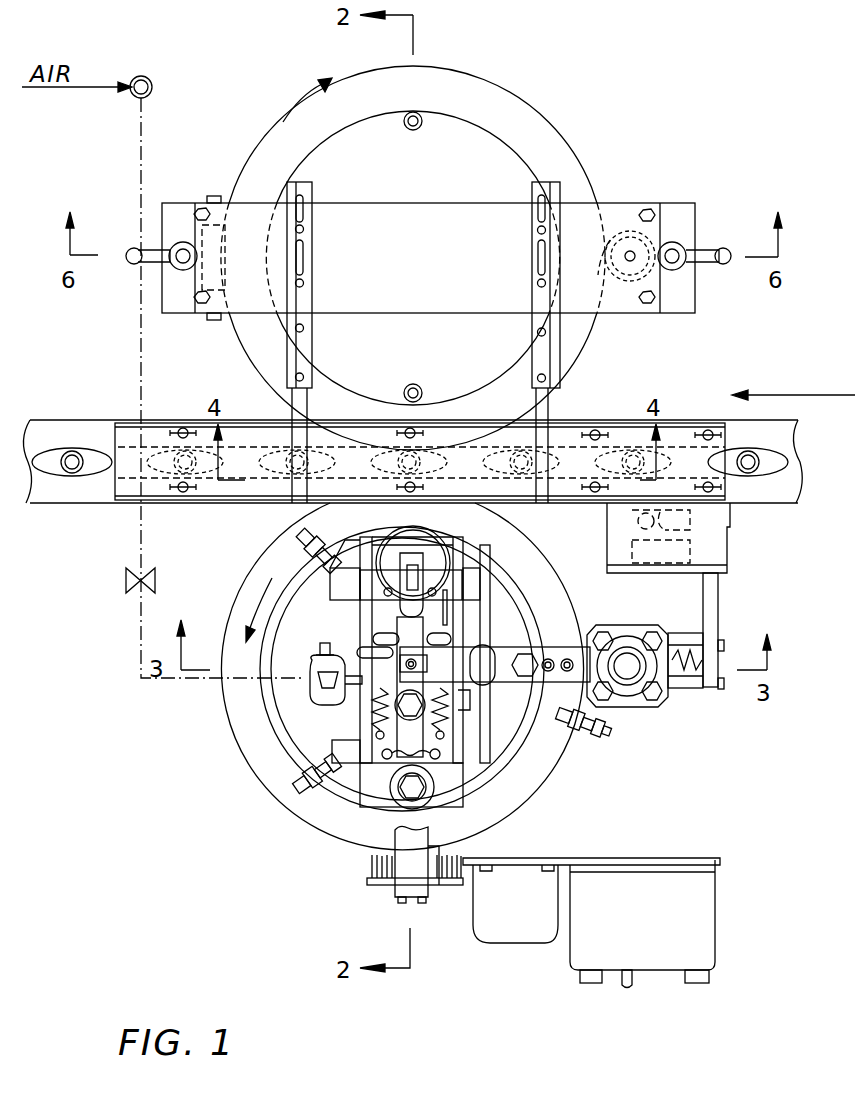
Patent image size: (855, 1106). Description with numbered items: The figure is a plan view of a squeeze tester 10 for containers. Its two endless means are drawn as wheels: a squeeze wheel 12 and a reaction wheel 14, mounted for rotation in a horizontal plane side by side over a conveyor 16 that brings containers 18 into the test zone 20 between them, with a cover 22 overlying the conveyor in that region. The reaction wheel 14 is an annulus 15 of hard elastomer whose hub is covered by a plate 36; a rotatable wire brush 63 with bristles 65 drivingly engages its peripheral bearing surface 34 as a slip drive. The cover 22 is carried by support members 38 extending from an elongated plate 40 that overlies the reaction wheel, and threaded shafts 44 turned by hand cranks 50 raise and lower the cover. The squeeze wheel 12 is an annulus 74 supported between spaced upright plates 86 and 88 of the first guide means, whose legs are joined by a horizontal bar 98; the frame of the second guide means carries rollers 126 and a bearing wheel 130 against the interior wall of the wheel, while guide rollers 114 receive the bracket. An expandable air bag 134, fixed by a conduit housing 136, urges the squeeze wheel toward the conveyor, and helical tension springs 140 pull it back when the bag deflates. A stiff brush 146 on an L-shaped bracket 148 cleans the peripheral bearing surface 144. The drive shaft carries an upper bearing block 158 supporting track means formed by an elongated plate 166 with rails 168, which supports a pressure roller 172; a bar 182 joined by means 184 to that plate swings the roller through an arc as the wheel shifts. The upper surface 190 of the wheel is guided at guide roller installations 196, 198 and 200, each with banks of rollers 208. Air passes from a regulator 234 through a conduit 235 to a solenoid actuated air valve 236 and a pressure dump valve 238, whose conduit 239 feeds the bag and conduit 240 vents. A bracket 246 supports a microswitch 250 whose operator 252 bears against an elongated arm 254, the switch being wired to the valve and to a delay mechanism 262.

The squeeze tester 10 is at (740, 110).
The squeeze wheel 12 is at (228, 590).
The reaction wheel 14 is at (218, 116).
The annulus 15 is at (530, 120).
The conveyor 16 is at (57, 430).
The containers 18 is at (45, 470).
The test zone 20 is at (478, 458).
The cover 22 is at (683, 432).
The peripheral bearing surface 34 is at (500, 90).
The plate 36 is at (452, 120).
The support members 38 is at (304, 400).
The elongated plate 40 is at (424, 212).
The threaded shafts 44 is at (185, 242).
The hand cranks 50 is at (128, 250).
The wire brush 63 is at (632, 230).
The bristles 65 is at (600, 238).
The annulus 74 is at (255, 740).
The upright plate 86 is at (275, 770).
The upright plate 88 is at (520, 805).
The horizontal bar 98 is at (453, 810).
The guide rollers 114 is at (406, 580).
The rollers 126 is at (375, 806).
The bearing wheel 130 is at (442, 548).
The air bag 134 is at (470, 625).
The conduit housing 136 is at (470, 690).
The helical tension springs 140 is at (372, 720).
The peripheral bearing surface 144 is at (291, 788).
The stiff brush 146 is at (440, 886).
The L-shaped bracket 148 is at (408, 850).
The upper bearing block 158 is at (640, 707).
The elongated plate 166 is at (700, 622).
The rails 168 is at (700, 646).
The pressure roller 172 is at (578, 645).
The bar 182 is at (497, 650).
The connecting means 184 is at (430, 665).
The upper surface 190 is at (363, 840).
The guide roller installation 196 is at (605, 760).
The guide roller installation 198 is at (312, 815).
The guide roller installation 200 is at (280, 532).
The upper bank of rollers 208 is at (600, 745).
The regulator 234 is at (147, 78).
The conduit 235 is at (141, 333).
The solenoid actuated air valve 236 is at (125, 592).
The pressure dump valve 238 is at (308, 690).
The conduit 239 is at (355, 600).
The conduit 240 is at (308, 665).
The bracket 246 is at (716, 578).
The microswitch 250 is at (700, 554).
The operator 252 is at (735, 527).
The elongated arm 254 is at (620, 550).
The delay mechanism 262 is at (503, 935).